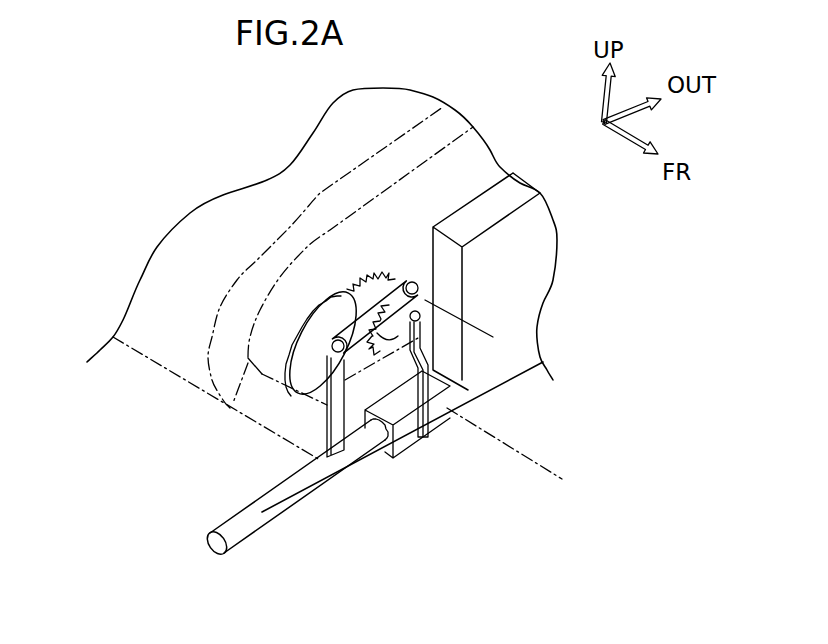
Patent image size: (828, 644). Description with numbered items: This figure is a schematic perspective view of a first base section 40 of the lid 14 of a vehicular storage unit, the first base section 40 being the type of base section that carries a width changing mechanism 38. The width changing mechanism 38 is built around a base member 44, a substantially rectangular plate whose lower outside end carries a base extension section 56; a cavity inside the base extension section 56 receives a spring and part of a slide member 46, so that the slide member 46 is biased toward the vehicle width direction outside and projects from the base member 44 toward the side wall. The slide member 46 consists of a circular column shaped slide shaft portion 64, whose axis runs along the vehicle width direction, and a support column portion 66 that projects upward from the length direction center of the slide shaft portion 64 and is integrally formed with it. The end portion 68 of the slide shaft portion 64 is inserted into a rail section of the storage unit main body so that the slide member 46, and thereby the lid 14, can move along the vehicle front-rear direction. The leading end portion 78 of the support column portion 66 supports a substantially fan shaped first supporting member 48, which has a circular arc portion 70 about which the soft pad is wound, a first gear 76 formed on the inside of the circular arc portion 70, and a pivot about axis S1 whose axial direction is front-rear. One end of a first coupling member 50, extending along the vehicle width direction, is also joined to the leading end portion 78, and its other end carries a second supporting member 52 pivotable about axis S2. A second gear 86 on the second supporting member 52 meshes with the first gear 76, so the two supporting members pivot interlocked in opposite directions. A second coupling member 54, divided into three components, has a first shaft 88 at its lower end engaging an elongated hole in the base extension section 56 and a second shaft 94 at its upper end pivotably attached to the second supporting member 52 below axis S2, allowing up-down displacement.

The lid 14 is at (166, 394).
The width changing mechanism 38 is at (353, 278).
The first base section 40 is at (186, 538).
The base member 44 is at (526, 318).
The slide member 46 is at (338, 496).
The first supporting member 48 is at (340, 314).
The first coupling member 50 is at (356, 346).
The second supporting member 52 is at (392, 323).
The second coupling member 54 is at (444, 388).
The base extension section 56 is at (465, 398).
The slide shaft portion 64 is at (280, 515).
The support column portion 66 is at (326, 432).
The end portion 68 is at (227, 529).
The circular arc portion 70 is at (318, 314).
The first gear 76 is at (368, 277).
The leading end portion 78 is at (331, 347).
The second gear 86 is at (400, 280).
The first shaft 88 is at (434, 430).
The second shaft 94 is at (450, 305).
The axis S1 is at (562, 480).
The axis S2 is at (483, 334).